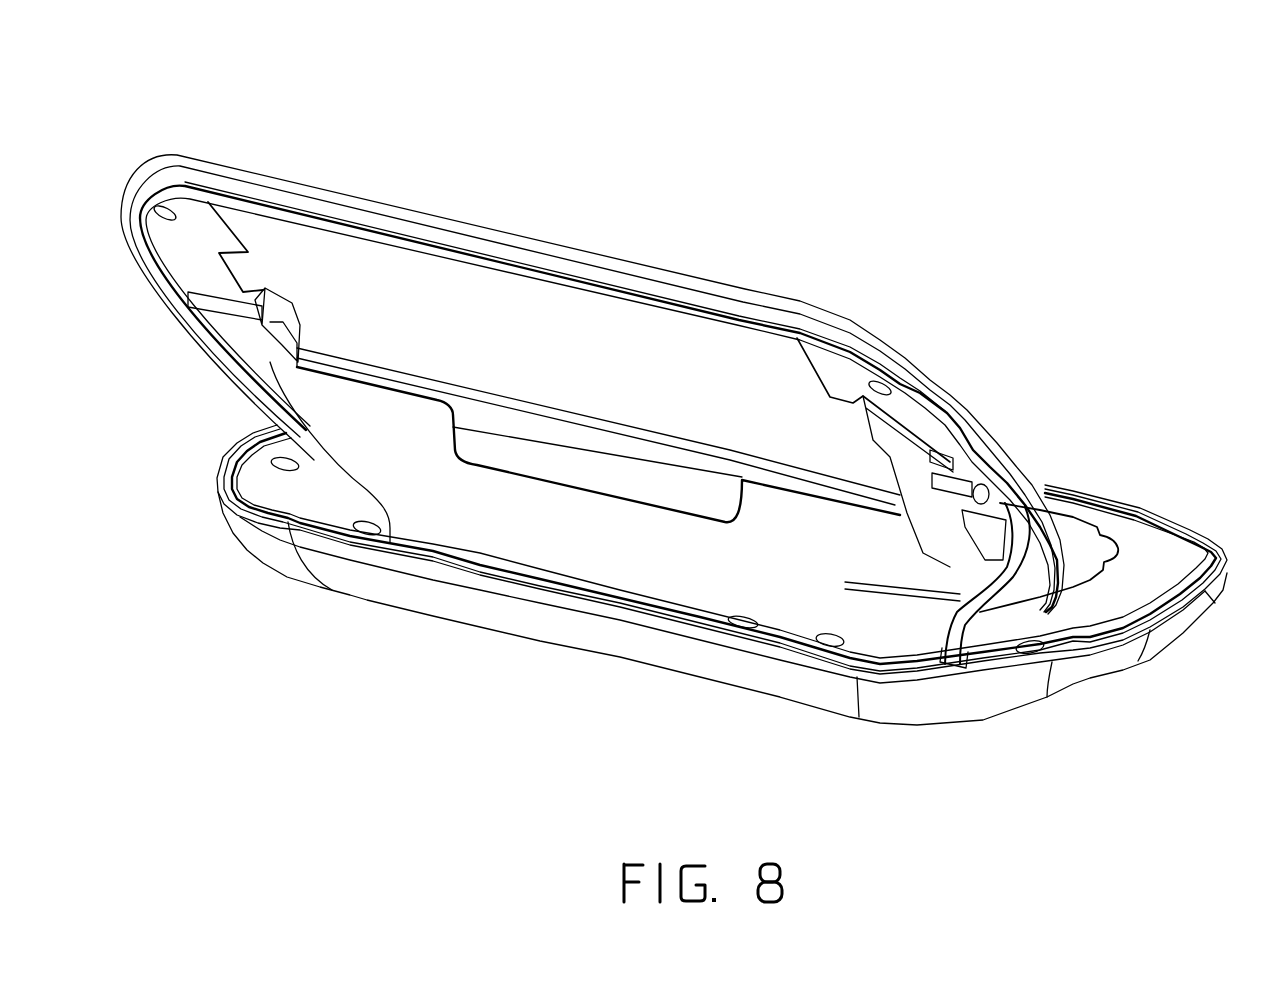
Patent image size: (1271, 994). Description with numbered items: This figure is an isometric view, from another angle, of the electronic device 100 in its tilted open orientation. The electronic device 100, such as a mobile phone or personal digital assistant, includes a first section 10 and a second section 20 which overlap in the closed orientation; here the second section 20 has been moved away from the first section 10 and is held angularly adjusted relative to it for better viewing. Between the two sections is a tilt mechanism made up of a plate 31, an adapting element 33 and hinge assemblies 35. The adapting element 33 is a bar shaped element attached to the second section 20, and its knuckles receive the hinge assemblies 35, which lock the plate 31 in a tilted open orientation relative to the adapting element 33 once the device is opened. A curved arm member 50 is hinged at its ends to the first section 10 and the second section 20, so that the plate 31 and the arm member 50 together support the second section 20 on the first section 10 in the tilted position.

The electronic device 100 is at (707, 88).
The first section 10 is at (1012, 697).
The second section 20 is at (798, 323).
The plate 31 is at (367, 427).
The adapting element 33 is at (643, 452).
The hinge assemblies 35 is at (982, 494).
The arm member 50 is at (985, 583).